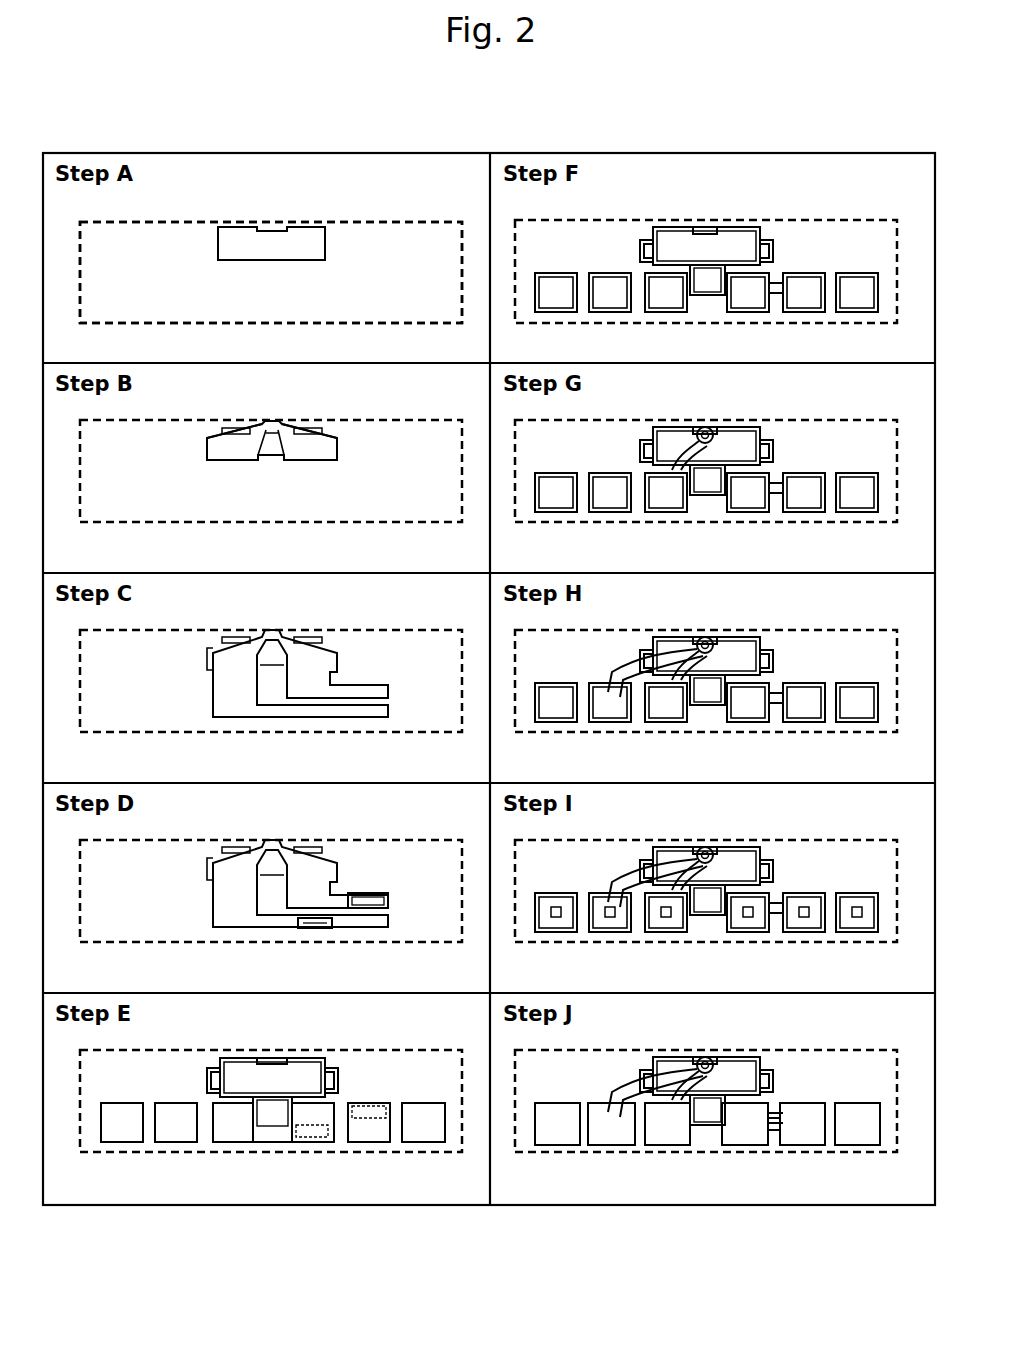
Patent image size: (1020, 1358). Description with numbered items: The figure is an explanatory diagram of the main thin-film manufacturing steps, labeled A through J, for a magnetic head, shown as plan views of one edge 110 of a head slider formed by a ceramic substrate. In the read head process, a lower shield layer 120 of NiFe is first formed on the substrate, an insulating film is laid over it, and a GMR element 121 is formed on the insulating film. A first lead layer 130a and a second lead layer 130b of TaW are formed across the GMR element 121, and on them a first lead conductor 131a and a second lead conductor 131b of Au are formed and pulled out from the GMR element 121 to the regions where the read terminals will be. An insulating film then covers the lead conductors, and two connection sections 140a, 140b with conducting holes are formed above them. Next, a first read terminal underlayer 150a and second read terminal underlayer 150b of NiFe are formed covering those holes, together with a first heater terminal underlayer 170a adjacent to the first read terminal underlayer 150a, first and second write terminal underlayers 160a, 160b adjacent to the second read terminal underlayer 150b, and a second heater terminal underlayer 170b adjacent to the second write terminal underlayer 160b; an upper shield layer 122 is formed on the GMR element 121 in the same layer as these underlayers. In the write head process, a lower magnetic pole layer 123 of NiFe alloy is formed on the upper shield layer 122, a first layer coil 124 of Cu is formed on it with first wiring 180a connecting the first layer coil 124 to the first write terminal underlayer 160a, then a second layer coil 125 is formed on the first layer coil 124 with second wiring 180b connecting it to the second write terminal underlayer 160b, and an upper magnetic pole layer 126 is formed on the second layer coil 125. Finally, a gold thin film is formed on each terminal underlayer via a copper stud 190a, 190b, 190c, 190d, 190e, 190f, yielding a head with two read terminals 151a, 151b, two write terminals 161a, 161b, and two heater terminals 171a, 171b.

The edge of head slider 110 is at (403, 222).
The lower shield layer 120 is at (268, 230).
The GMR element 121 is at (272, 421).
The first lead layer 130a is at (310, 448).
The second lead layer 130b is at (240, 448).
The first lead conductor 131a is at (365, 693).
The second lead conductor 131b is at (285, 710).
The connection section 140a is at (355, 910).
The connection section 140b is at (302, 928).
The upper shield layer 122 is at (268, 1062).
The first read terminal underlayer 150a is at (368, 1125).
The second read terminal underlayer 150b is at (305, 1125).
The first write terminal underlayer 160a is at (235, 1125).
The second write terminal underlayer 160b is at (173, 1125).
The first heater terminal underlayer 170a is at (428, 1125).
The second heater terminal underlayer 170b is at (113, 1125).
The lower magnetic pole layer 123 is at (707, 229).
The first layer coil 124 is at (728, 440).
The first wiring 180a is at (693, 429).
The second layer coil 125 is at (725, 640).
The second wiring 180b is at (606, 676).
The upper magnetic pole layer 126 is at (707, 846).
The copper stud 190a is at (556, 917).
The copper stud 190b is at (610, 917).
The copper stud 190c is at (666, 917).
The copper stud 190d is at (748, 917).
The copper stud 190e is at (804, 917).
The copper stud 190f is at (857, 917).
The heater terminal 171b is at (557, 1128).
The write terminal 161b is at (611, 1128).
The write terminal 161a is at (667, 1128).
The read terminal 151b is at (745, 1128).
The read terminal 151a is at (802, 1128).
The heater terminal 171a is at (857, 1128).